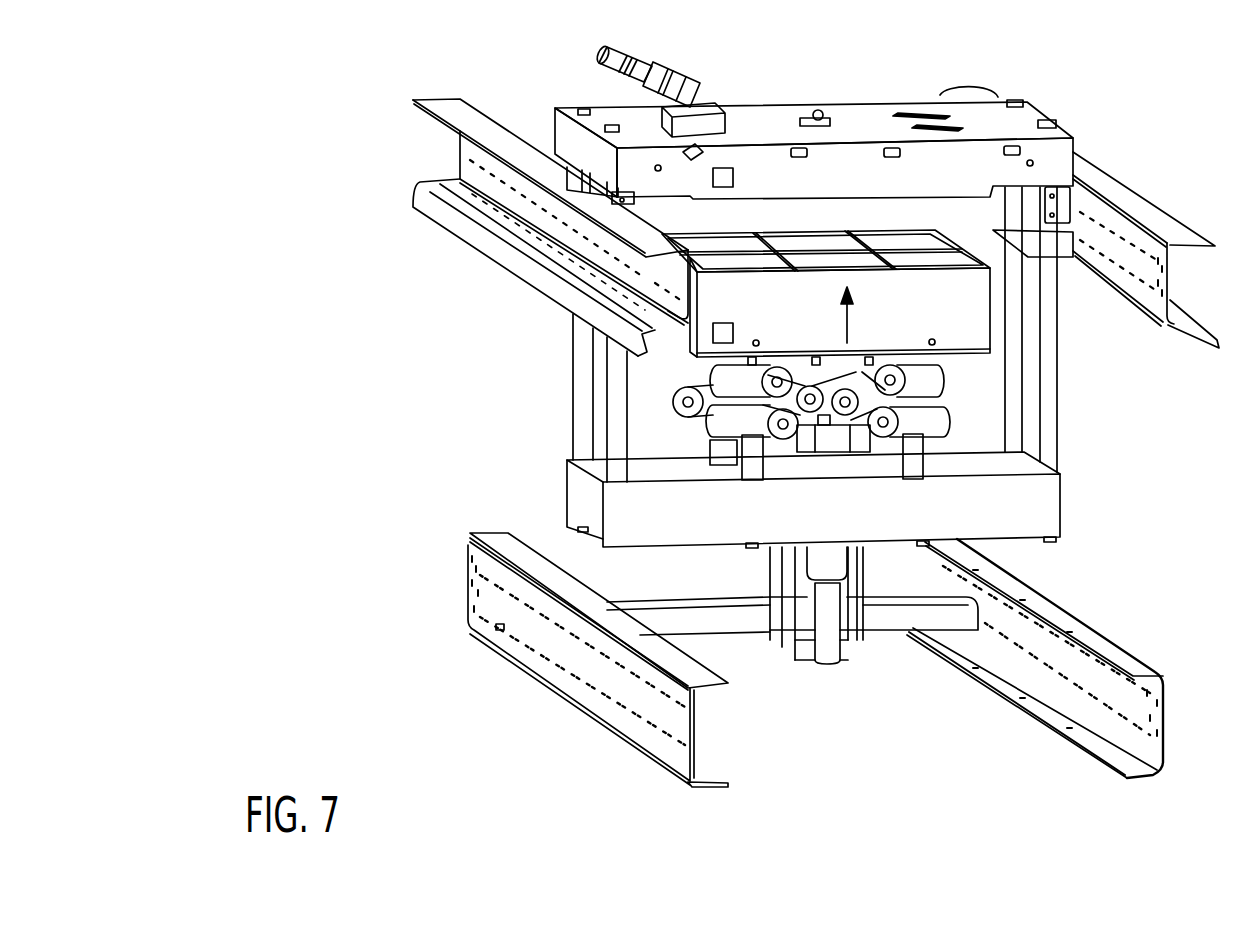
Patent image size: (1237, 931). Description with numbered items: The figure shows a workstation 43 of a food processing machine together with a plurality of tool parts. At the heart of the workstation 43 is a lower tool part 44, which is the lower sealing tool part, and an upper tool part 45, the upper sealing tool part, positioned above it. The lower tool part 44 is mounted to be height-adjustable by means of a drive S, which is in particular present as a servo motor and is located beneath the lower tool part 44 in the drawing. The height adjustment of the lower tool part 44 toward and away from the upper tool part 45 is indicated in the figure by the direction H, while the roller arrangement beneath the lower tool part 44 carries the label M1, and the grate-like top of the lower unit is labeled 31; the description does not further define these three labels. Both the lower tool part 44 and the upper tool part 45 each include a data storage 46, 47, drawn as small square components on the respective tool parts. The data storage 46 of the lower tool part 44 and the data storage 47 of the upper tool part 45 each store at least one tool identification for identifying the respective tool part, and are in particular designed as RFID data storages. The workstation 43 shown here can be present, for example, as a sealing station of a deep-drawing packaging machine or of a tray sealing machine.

The workstation 43 is at (1113, 102).
The lower tool part 44 is at (948, 317).
The upper tool part 45 is at (857, 115).
The data storage 46 is at (735, 323).
The data storage 47 is at (733, 168).
The grate 31 is at (950, 243).
The roller motor assembly M1 is at (673, 438).
The height direction arrow H is at (854, 315).
The drive S is at (855, 637).